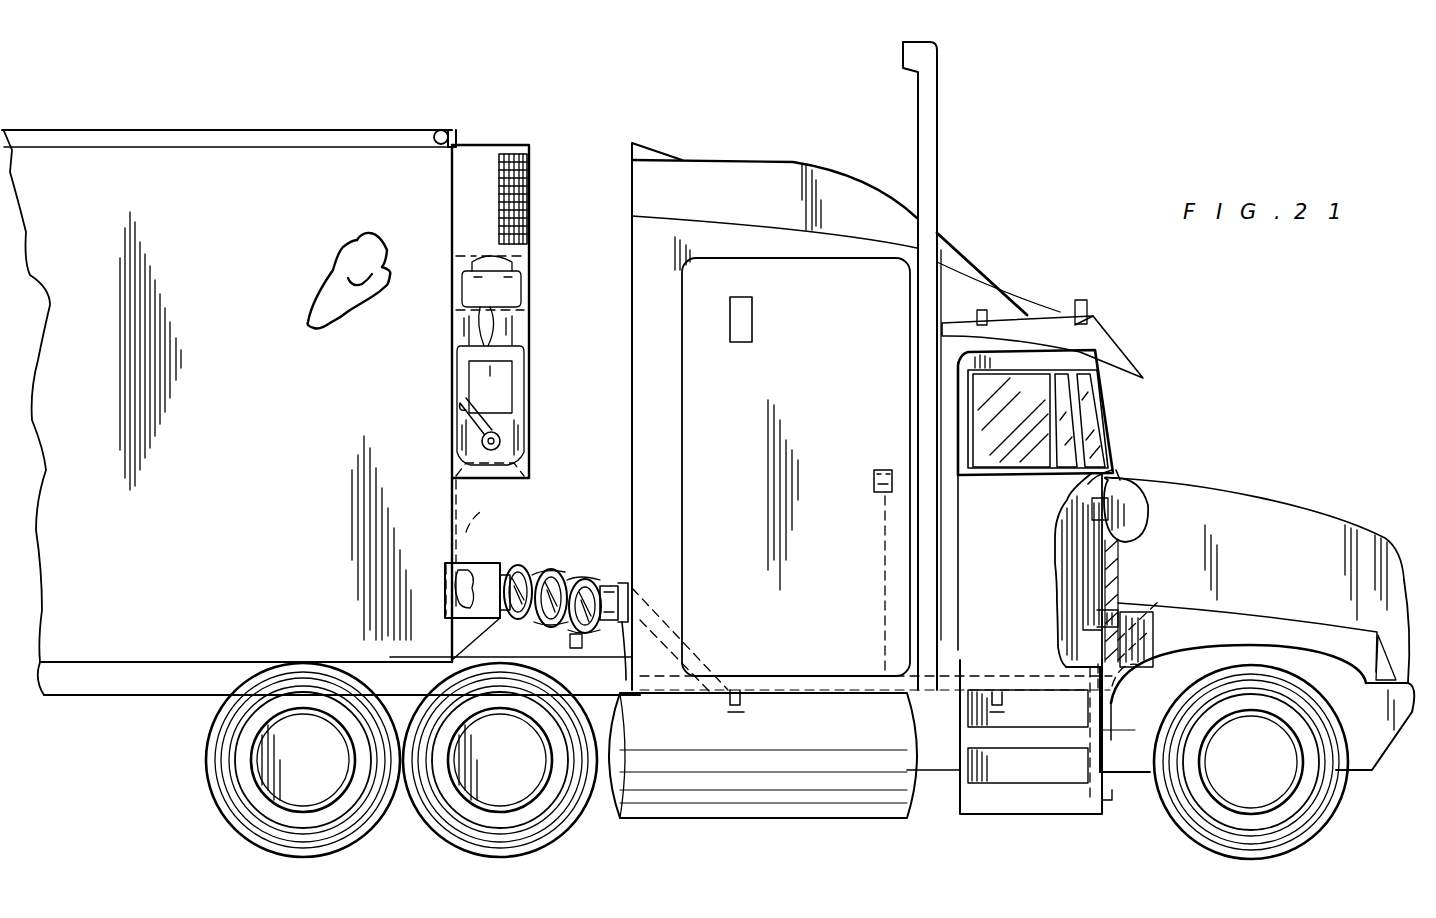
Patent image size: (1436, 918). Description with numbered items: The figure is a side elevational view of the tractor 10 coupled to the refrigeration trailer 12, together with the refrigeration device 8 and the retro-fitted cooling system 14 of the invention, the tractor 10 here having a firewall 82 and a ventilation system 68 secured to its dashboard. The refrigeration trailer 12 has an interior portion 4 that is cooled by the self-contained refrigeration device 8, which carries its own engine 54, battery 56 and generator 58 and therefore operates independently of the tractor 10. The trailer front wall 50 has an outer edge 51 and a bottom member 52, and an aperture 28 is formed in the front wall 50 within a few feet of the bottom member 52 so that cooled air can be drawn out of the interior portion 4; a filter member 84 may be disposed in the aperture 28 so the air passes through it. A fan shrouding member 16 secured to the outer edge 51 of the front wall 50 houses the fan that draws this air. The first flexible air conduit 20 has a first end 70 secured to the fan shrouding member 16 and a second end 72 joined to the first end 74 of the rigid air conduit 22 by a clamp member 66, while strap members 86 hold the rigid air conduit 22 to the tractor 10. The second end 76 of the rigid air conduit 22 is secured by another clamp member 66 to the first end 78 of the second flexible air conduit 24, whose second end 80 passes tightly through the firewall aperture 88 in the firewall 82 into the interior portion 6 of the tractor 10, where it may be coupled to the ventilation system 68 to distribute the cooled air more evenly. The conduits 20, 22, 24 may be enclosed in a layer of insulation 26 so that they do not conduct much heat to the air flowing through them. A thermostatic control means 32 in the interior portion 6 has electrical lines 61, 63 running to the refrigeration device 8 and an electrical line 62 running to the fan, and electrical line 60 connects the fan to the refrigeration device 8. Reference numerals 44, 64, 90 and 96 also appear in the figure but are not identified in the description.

The interior portion of the refer trailer 4 is at (382, 267).
The interior portion of the tractor 6 is at (1037, 400).
The refrigeration device 8 is at (519, 197).
The tractor 10 is at (806, 150).
The refrigeration trailer 12 is at (421, 112).
The cooling system 14 is at (919, 692).
The fan shrouding member 16 is at (485, 590).
The first flexible air conduit 20 is at (575, 650).
The rigid air conduit 22 is at (933, 755).
The second flexible air conduit 24 is at (1092, 668).
The layer of insulation 26 is at (868, 712).
The aperture 28 is at (452, 562).
The thermostatic control means 32 is at (893, 484).
The flexible bellows 44 is at (530, 568).
The front wall 50 is at (455, 128).
The outer edge of the front wall 51 is at (455, 130).
The bottom member 52 is at (230, 700).
The engine 54 is at (504, 427).
The battery 56 is at (508, 290).
The generator 58 is at (470, 412).
The electrical line 60 is at (486, 520).
The electrical line 61 is at (492, 617).
The electrical line 62 is at (540, 584).
The electrical line 63 is at (568, 598).
The step 64 is at (1106, 790).
The clamp member 66 is at (626, 662).
The ventilation system 68 is at (1142, 478).
The first end of the first flexible air conduit 70 is at (512, 572).
The second end of the first flexible air conduit 72 is at (622, 585).
The first end of the rigid air conduit 74 is at (632, 612).
The second end of the rigid air conduit 76 is at (1000, 775).
The first end of the second flexible air conduit 78 is at (1166, 662).
The second end of the second flexible air conduit 80 is at (1180, 612).
The firewall 82 is at (1097, 564).
The filter member 84 is at (444, 598).
The strap member 86 is at (728, 718).
The firewall aperture 88 is at (1158, 596).
The top rail 90 is at (352, 130).
The mirror bracket 96 is at (1108, 492).